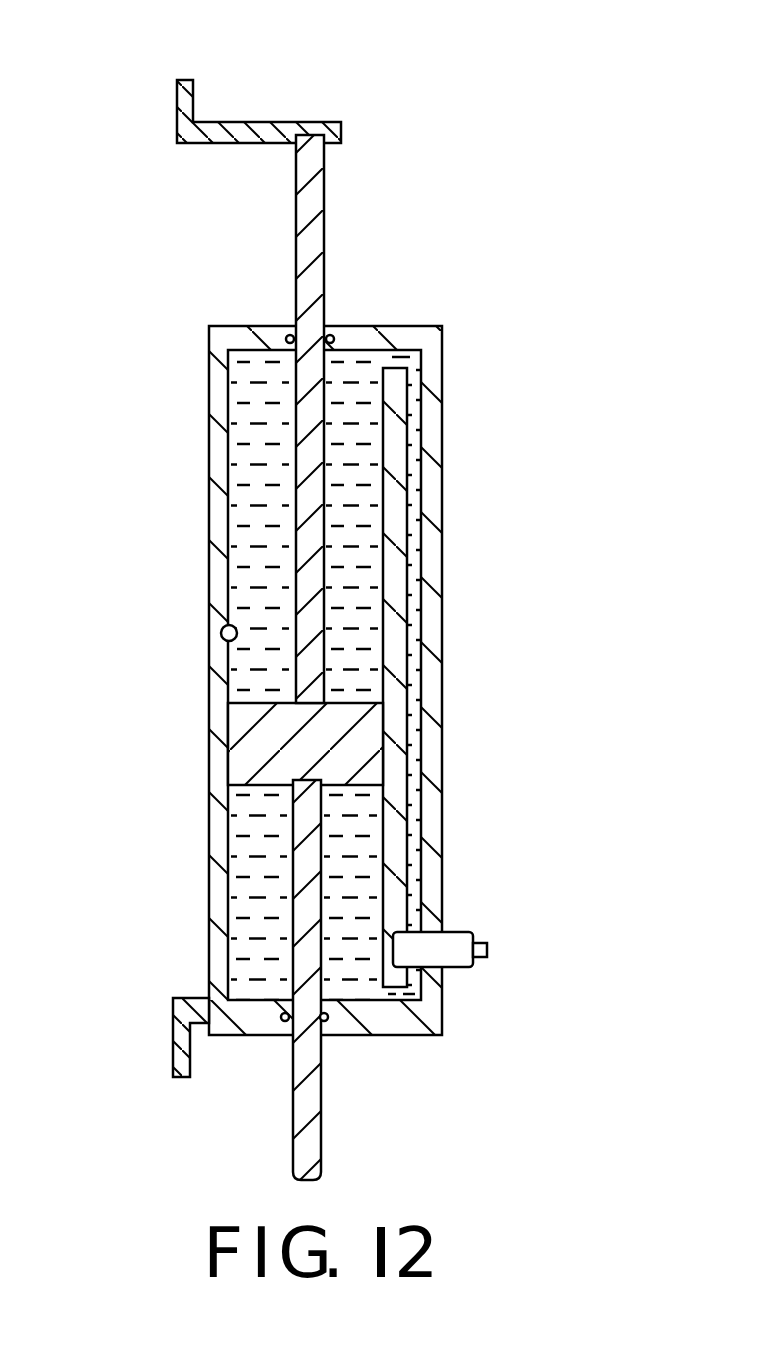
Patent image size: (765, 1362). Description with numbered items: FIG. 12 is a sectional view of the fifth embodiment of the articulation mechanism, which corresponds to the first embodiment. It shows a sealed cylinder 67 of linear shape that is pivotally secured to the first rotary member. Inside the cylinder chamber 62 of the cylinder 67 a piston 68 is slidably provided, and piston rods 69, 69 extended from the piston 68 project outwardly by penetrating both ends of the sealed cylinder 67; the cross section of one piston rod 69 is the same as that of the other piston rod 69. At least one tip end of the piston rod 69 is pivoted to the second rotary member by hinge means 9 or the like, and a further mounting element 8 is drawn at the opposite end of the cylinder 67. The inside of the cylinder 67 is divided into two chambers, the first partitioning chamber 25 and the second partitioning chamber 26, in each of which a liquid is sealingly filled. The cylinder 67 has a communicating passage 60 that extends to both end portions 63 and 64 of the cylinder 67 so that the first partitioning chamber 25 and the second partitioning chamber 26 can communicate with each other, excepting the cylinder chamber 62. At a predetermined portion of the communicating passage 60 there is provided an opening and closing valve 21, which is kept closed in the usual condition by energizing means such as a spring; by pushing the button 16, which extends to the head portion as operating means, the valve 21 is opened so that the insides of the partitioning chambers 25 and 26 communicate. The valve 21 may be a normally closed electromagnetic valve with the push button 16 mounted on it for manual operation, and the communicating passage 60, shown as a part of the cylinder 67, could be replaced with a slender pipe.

The lower mounting bracket 8 is at (175, 1072).
The hinge means 9 is at (185, 82).
The push button 16 is at (489, 950).
The opening and closing valve 21 is at (479, 924).
The first partitioning chamber 25 is at (245, 513).
The second partitioning chamber 26 is at (245, 915).
The communicating passage 60 is at (418, 550).
The cylinder chamber 62 is at (222, 627).
The end portion 63 is at (234, 326).
The end portion 64 is at (262, 1035).
The sealed cylinder 67 is at (308, 689).
The piston 68 is at (373, 748).
The piston rod 69 is at (324, 262).